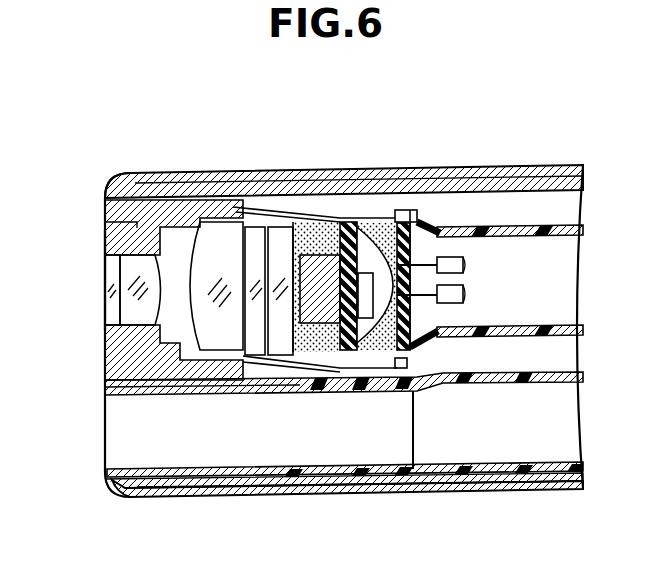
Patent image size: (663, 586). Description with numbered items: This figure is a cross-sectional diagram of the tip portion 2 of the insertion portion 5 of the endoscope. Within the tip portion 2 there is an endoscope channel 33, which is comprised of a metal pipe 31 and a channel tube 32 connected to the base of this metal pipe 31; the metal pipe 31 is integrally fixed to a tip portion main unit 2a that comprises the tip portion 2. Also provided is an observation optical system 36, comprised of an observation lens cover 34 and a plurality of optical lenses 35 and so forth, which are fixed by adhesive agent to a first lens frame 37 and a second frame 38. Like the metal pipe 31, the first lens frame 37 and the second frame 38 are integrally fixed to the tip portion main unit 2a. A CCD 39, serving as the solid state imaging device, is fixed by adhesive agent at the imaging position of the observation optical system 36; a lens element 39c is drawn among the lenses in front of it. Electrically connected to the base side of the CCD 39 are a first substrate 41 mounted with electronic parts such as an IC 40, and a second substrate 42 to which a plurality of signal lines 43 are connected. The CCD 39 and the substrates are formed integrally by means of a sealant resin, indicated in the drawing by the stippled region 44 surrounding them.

The tip portion 2 is at (345, 170).
The tip portion main unit 2a is at (127, 175).
The insertion portion 5 is at (466, 128).
The metal pipe 31 is at (185, 488).
The channel tube 32 is at (537, 468).
The endoscope channel 33 is at (125, 443).
The observation lens cover 34 is at (100, 313).
The optical lenses 35 is at (233, 225).
The observation optical system 36 is at (88, 266).
The first lens frame 37 is at (103, 232).
The second frame 38 is at (162, 277).
The CCD 39 is at (282, 248).
The intermediate lens 39c is at (258, 248).
The IC 40 is at (368, 272).
The first substrate 41 is at (348, 346).
The second substrate 42 is at (425, 398).
The signal lines 43 is at (454, 294).
The filler adhesive 44 is at (307, 349).